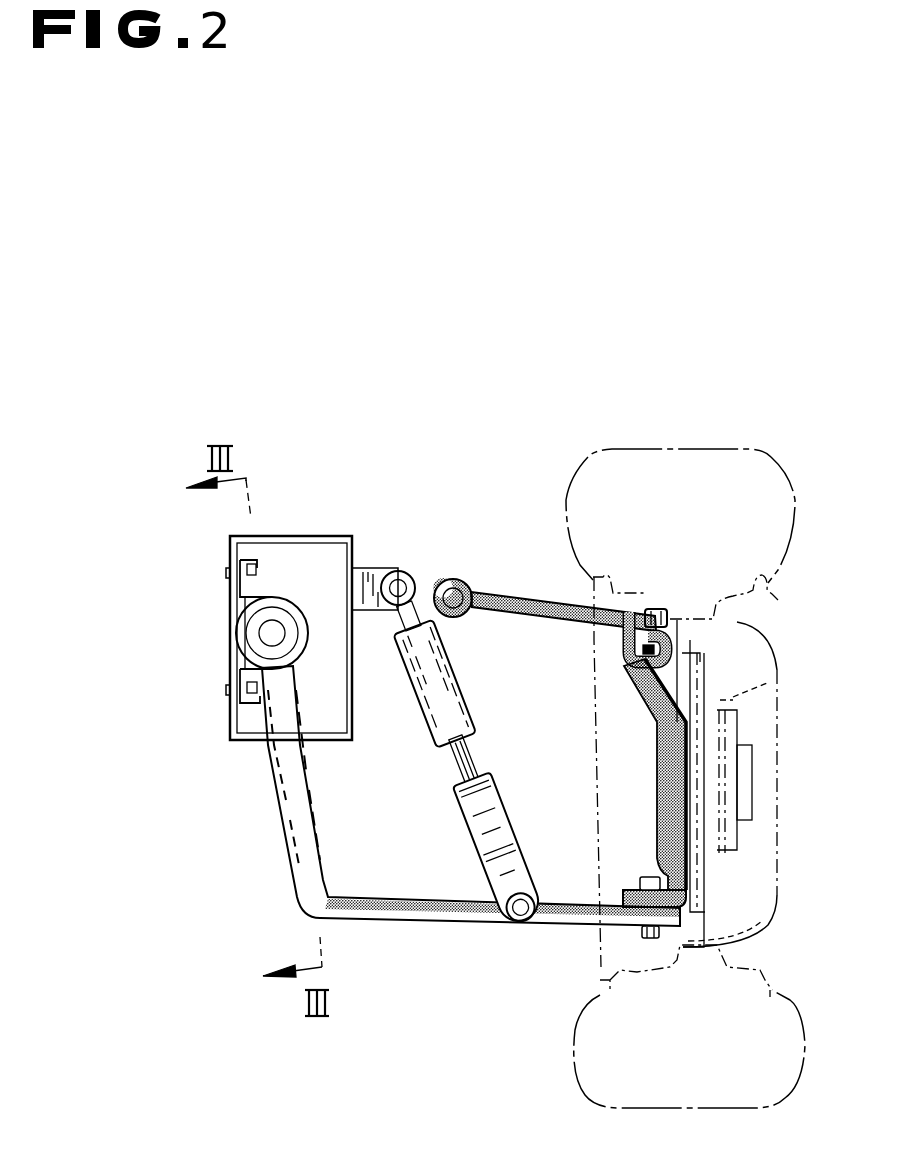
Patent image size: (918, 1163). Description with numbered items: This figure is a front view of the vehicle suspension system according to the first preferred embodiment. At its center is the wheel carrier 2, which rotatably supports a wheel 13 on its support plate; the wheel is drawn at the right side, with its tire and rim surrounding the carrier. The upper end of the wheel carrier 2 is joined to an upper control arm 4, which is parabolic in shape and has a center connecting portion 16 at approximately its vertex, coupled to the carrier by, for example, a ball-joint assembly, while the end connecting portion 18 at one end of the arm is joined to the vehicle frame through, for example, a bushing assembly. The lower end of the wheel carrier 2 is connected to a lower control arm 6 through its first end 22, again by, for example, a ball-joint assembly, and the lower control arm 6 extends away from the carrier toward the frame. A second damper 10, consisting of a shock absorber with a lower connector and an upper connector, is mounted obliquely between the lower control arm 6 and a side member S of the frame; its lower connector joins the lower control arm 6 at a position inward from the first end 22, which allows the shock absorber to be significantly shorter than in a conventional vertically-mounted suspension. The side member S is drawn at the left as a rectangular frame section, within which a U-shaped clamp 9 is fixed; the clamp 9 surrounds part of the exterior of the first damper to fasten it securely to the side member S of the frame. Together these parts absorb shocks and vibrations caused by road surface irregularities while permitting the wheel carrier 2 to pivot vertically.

The wheel carrier 2 is at (658, 792).
The upper control arm 4 is at (532, 588).
The lower control arm 6 is at (398, 935).
The U-shaped clamp 9 is at (280, 594).
The second damper 10 is at (484, 690).
The wheel 13 is at (743, 625).
The center connecting portion 16 is at (658, 593).
The end connecting portion 18 is at (462, 577).
The first end 22 is at (640, 935).
The side member S is at (288, 530).